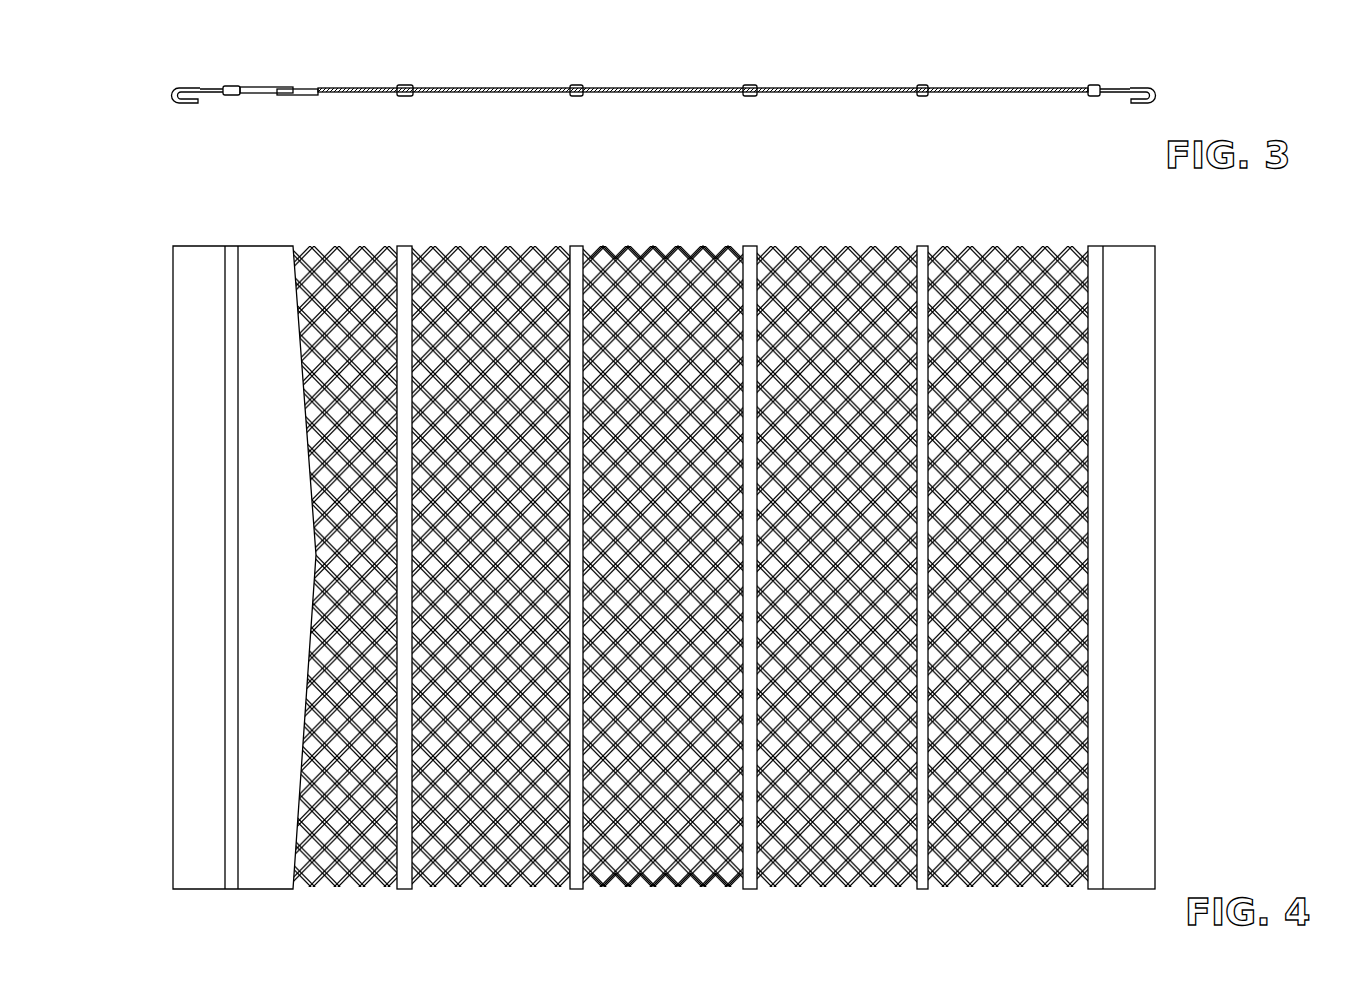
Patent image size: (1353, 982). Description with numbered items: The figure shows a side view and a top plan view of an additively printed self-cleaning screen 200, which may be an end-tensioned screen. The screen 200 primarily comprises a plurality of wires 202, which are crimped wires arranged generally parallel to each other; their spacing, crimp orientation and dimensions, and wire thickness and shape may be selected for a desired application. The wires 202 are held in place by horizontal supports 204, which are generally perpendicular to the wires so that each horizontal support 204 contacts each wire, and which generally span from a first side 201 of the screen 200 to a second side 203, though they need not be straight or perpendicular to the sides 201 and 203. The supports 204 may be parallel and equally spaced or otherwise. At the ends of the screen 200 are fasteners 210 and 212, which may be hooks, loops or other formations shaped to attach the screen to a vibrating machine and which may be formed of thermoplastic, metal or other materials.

In FIG. 3, the self-cleaning screen 200 is at (943, 54).
In FIG. 4, the self-cleaning screen 200 is at (1205, 256).
In FIG. 4, the first side 201 is at (666, 889).
In FIG. 3, the plurality of wires 202 is at (673, 87).
In FIG. 4, the plurality of wires 202 is at (972, 267).
In FIG. 4, the second side 203 is at (632, 248).
In FIG. 3, the horizontal supports 204 is at (410, 86).
In FIG. 4, the horizontal supports 204 is at (406, 247).
In FIG. 3, the fastener 210 is at (203, 92).
In FIG. 4, the fastener 210 is at (181, 500).
In FIG. 3, the fastener 212 is at (1128, 87).
In FIG. 4, the fastener 212 is at (1145, 556).